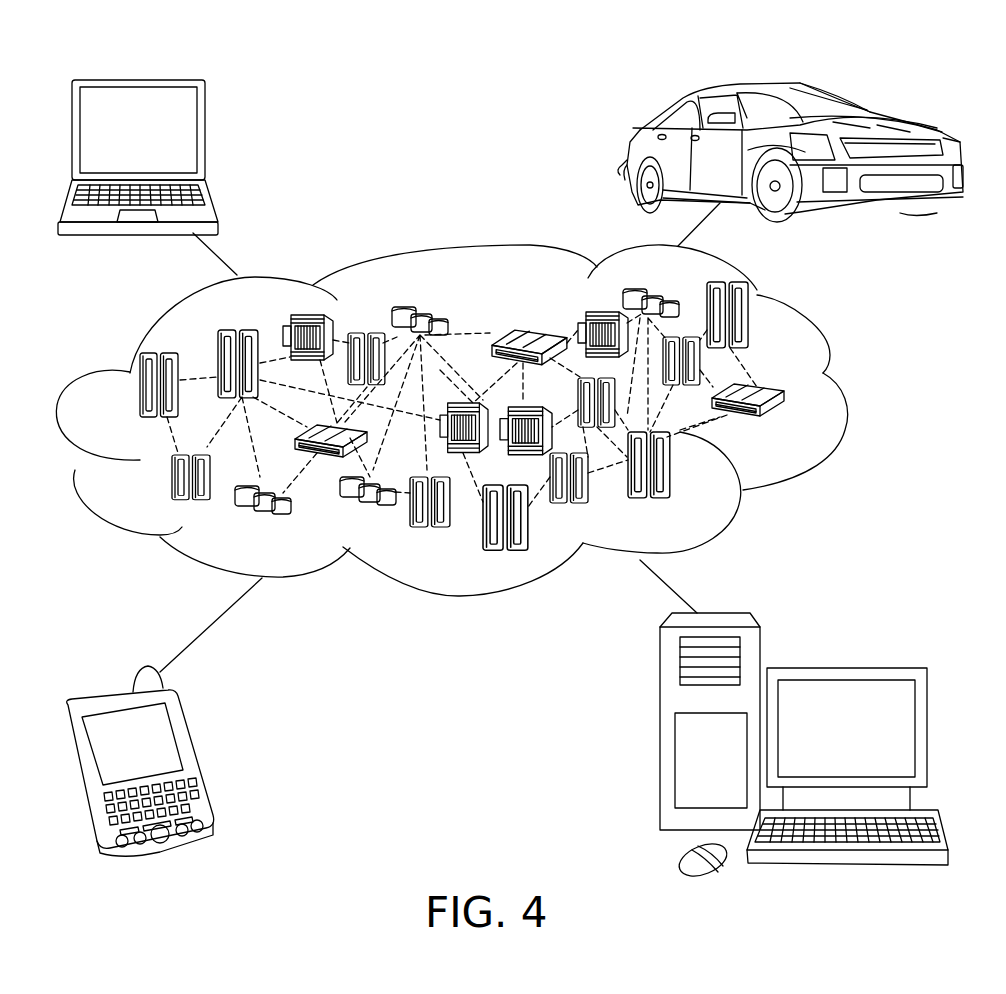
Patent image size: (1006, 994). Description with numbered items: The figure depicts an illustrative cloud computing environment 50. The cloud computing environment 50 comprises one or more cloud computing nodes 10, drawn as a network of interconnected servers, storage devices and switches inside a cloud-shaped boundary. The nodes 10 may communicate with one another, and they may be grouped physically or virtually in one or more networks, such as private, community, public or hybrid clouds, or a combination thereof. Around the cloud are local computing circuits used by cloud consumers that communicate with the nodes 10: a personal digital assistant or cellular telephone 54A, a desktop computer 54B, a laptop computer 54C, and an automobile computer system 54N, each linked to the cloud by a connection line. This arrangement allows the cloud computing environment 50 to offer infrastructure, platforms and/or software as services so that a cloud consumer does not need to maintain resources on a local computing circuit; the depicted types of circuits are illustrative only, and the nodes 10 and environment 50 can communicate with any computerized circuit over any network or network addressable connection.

The cloud computing node 10 is at (787, 423).
The cloud computing environment 50 is at (843, 395).
The personal digital assistant or cellular telephone 54A is at (197, 755).
The desktop computer 54B is at (843, 667).
The laptop computer 54C is at (205, 137).
The automobile computer system 54N is at (632, 152).